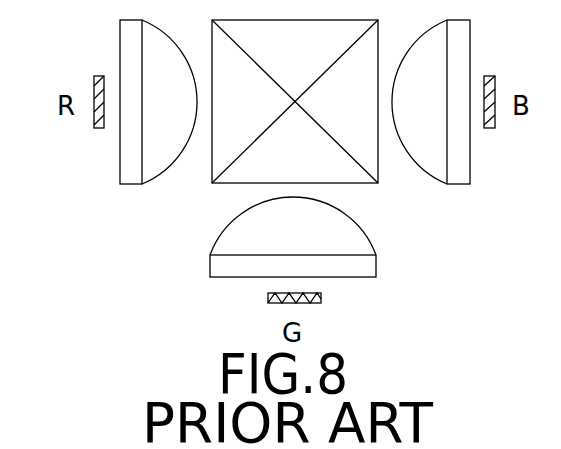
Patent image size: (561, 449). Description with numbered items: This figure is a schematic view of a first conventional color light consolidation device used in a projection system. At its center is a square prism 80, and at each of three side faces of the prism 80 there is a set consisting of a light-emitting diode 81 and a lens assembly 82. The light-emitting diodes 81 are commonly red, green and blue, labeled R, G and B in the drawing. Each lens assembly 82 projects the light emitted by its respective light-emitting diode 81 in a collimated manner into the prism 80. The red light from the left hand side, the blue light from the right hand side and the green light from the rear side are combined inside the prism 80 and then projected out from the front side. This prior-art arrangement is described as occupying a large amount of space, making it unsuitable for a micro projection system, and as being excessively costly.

The square prism 80 is at (378, 181).
The light-emitting diode 81 is at (95, 128).
The lens assembly 82 is at (130, 178).